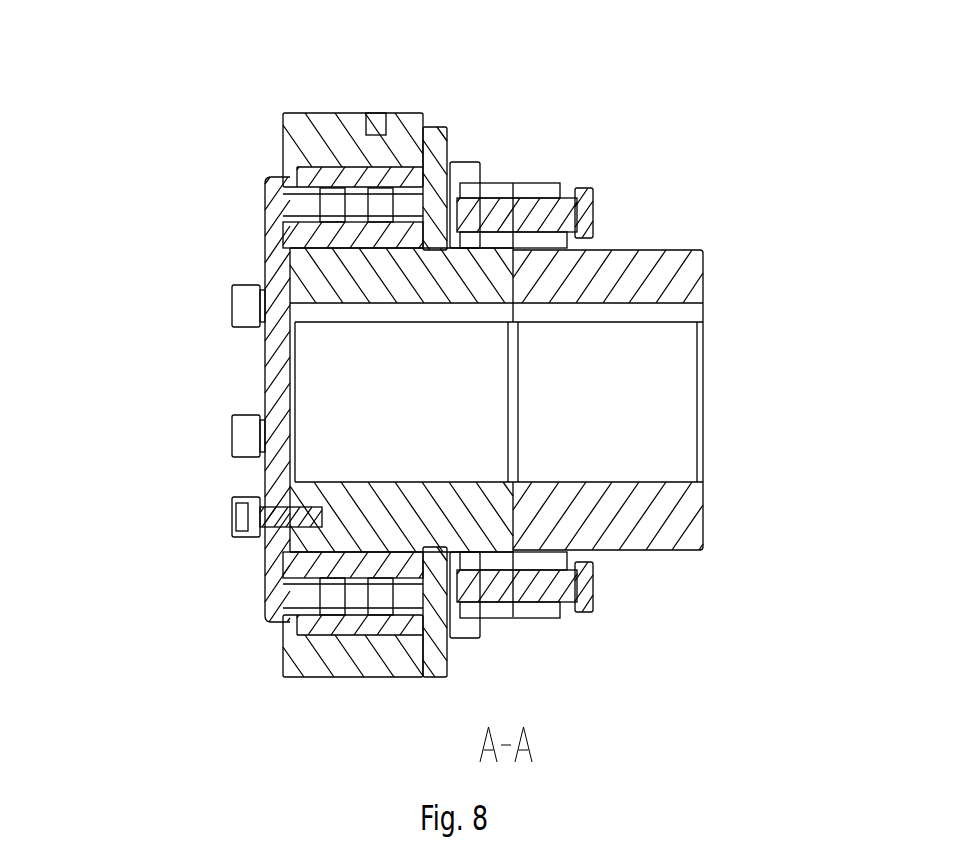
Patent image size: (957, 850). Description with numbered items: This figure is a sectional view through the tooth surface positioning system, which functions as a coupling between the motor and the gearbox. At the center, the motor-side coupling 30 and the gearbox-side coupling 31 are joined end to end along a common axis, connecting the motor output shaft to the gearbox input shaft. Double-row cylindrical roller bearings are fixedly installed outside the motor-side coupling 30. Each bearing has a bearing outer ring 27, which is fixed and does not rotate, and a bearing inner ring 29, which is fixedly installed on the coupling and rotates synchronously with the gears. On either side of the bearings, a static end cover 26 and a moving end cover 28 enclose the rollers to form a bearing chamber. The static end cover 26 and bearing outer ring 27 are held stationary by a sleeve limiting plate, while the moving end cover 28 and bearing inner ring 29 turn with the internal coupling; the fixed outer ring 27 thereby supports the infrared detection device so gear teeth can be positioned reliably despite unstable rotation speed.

The static end cover 26 is at (435, 132).
The bearing outer ring 27 is at (307, 180).
The moving end cover 28 is at (280, 245).
The bearing inner ring 29 is at (315, 565).
The motor-side coupling 30 is at (478, 545).
The gearbox-side coupling 31 is at (682, 285).